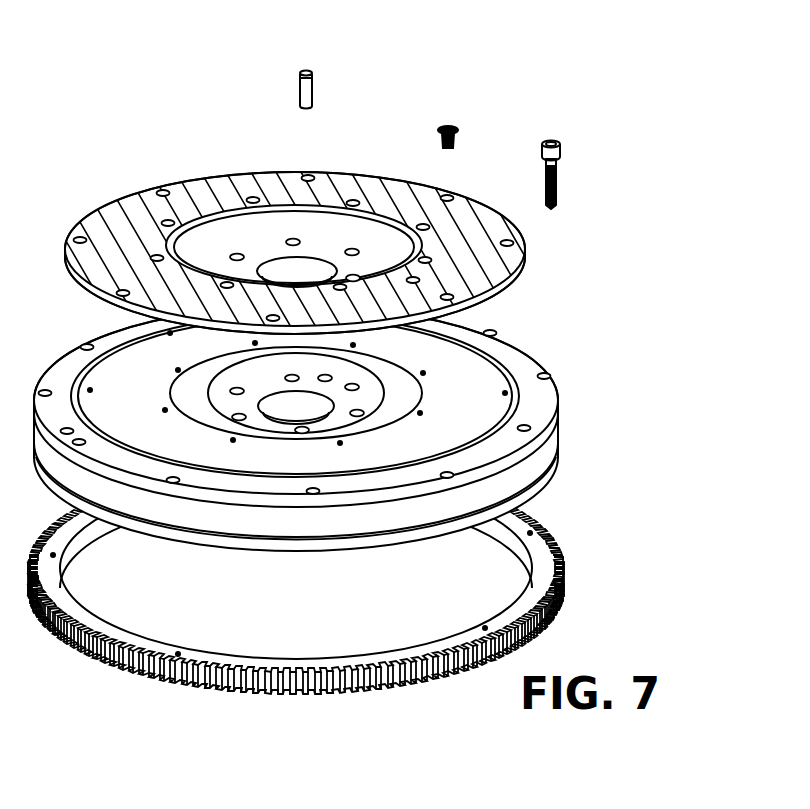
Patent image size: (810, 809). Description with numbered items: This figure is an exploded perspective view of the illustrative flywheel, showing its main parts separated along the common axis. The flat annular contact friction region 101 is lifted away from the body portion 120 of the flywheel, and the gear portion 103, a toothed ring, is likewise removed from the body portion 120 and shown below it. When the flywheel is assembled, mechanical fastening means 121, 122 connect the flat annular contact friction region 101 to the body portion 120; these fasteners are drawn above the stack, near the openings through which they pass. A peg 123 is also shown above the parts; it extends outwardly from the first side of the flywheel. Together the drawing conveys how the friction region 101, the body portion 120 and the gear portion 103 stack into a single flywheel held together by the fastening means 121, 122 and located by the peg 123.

The flat annular contact friction region 101 is at (447, 265).
The gear portion 103 is at (540, 580).
The body portion 120 is at (558, 408).
The mechanical fastening means 121 is at (562, 161).
The mechanical fastening means 122 is at (458, 128).
The peg 123 is at (299, 80).